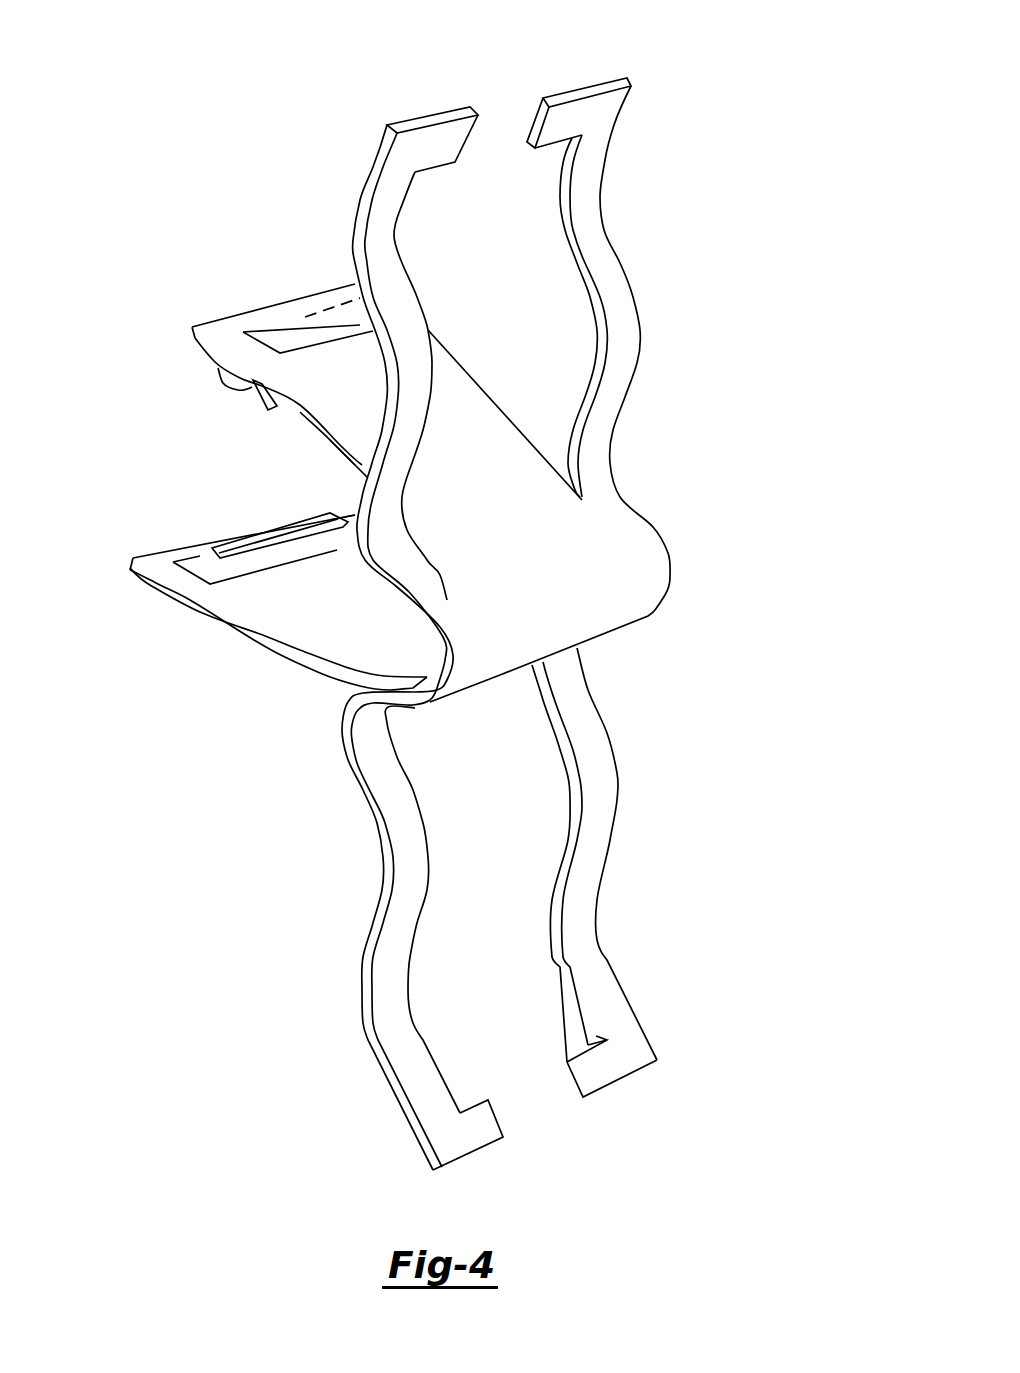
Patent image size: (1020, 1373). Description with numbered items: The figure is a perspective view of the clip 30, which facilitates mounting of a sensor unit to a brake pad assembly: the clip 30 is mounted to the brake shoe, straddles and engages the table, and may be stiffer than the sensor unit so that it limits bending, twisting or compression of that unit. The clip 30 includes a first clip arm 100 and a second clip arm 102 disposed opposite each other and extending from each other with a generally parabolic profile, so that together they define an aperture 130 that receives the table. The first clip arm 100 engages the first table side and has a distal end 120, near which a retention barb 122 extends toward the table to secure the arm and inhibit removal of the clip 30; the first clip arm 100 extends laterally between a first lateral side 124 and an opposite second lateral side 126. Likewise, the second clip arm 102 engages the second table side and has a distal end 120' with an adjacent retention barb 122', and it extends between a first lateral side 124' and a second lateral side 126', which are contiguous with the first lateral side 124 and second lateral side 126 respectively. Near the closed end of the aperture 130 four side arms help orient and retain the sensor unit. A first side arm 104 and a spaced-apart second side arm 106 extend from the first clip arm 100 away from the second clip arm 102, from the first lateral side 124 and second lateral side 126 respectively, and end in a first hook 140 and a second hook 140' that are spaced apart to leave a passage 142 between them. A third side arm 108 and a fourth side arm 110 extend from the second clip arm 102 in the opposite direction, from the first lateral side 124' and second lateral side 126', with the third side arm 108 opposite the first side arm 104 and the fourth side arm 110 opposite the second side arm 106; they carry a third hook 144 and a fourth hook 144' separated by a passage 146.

The clip 30 is at (675, 572).
The first clip arm 100 is at (467, 442).
The second clip arm 102 is at (258, 644).
The first side arm 104 is at (399, 212).
The second side arm 106 is at (608, 151).
The third side arm 108 is at (372, 926).
The fourth side arm 110 is at (606, 845).
The distal end 120 is at (282, 275).
The distal end 120' is at (213, 525).
The retention barb 122 is at (197, 358).
The retention barb 122' is at (260, 500).
The first lateral side 124 is at (281, 408).
The first lateral side 124' is at (278, 652).
The second lateral side 126 is at (505, 396).
The second lateral side 126' is at (328, 492).
The aperture 130 is at (170, 423).
The first hook 140 is at (432, 80).
The second hook 140' is at (579, 81).
The passage 142 is at (500, 130).
The third hook 144 is at (478, 1159).
The fourth hook 144' is at (628, 1095).
The passage 146 is at (544, 1106).